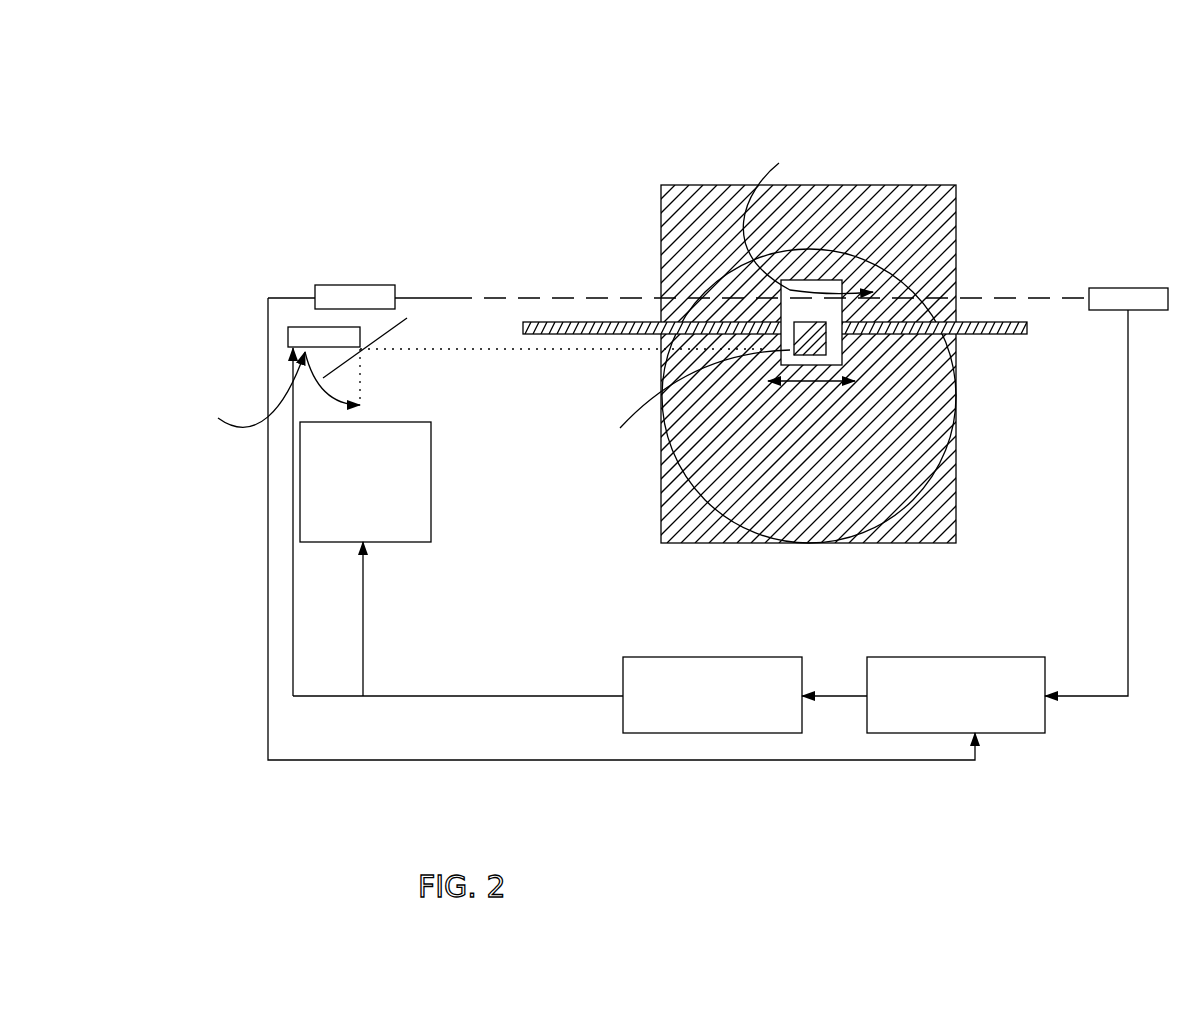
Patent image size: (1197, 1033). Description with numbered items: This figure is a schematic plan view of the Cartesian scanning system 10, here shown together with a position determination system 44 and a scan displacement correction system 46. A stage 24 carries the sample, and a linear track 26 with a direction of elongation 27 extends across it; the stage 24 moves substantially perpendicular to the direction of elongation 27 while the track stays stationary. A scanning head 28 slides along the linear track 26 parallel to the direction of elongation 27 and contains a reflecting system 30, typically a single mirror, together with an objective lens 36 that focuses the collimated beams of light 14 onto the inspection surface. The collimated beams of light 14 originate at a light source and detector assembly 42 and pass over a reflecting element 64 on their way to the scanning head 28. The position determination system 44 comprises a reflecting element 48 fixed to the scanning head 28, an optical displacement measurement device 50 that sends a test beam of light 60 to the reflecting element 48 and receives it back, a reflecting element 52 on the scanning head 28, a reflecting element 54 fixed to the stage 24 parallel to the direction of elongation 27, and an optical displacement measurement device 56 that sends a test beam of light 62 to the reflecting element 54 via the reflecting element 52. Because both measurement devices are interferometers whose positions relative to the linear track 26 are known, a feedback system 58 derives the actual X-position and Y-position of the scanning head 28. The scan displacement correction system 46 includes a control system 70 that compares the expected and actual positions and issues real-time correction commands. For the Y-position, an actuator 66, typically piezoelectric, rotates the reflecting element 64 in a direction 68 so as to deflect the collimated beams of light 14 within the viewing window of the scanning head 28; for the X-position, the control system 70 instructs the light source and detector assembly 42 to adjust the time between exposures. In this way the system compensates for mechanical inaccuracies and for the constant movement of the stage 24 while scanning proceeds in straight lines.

The Cartesian scanning system 10 is at (705, 127).
The collimated beams of light 14 is at (483, 352).
The stage 24 is at (935, 523).
The linear track 26 is at (1027, 327).
The direction of elongation 27 is at (857, 384).
The scanning head 28 is at (808, 218).
The reflecting system 30 is at (846, 346).
The objective lens 36 is at (695, 404).
The light source and detector assembly 42 is at (413, 477).
The position determination system 44 is at (1085, 202).
The scan displacement correction system 46 is at (543, 760).
The reflecting element 48 is at (892, 248).
The optical displacement measurement device 50 is at (1143, 300).
The reflecting element 52 is at (812, 318).
The reflecting element 54 is at (937, 217).
The optical displacement measurement device 56 is at (367, 297).
The feedback system 58 is at (920, 660).
The test beam of light 60 is at (1022, 297).
The test beam of light 62 is at (540, 292).
The reflecting element 64 is at (407, 318).
The actuator 66 is at (303, 335).
The direction 68 is at (251, 389).
The control system 70 is at (717, 670).